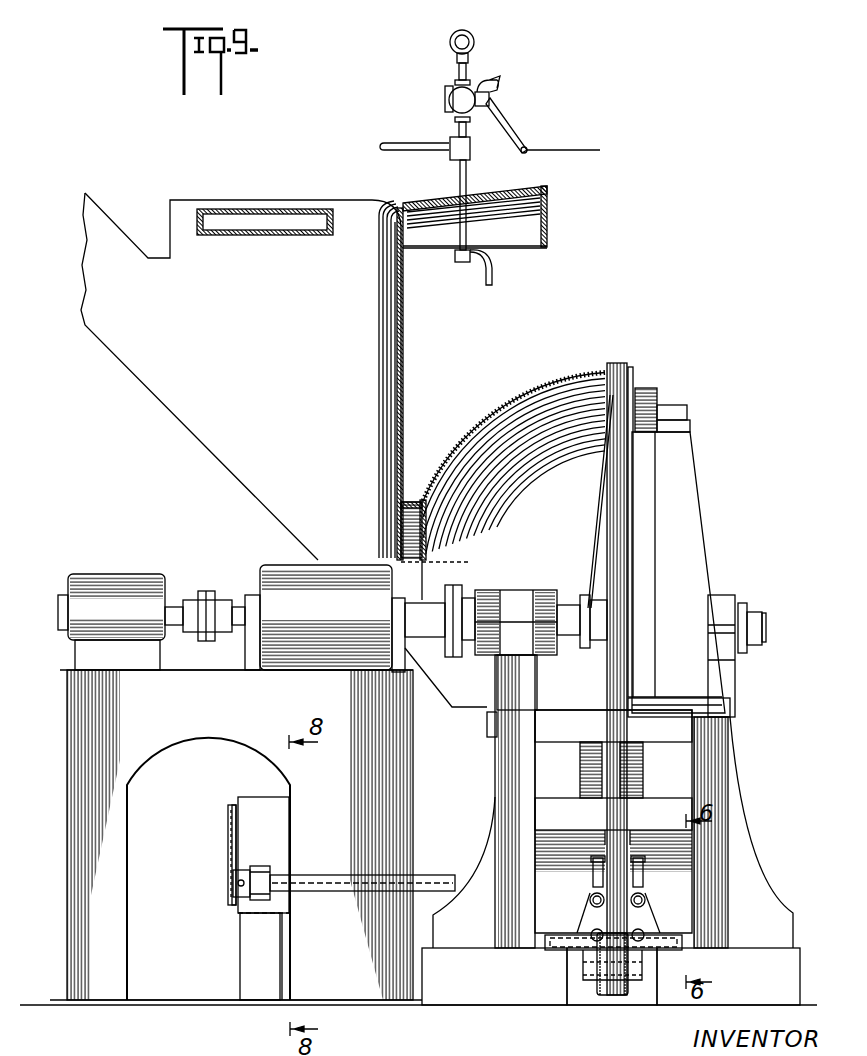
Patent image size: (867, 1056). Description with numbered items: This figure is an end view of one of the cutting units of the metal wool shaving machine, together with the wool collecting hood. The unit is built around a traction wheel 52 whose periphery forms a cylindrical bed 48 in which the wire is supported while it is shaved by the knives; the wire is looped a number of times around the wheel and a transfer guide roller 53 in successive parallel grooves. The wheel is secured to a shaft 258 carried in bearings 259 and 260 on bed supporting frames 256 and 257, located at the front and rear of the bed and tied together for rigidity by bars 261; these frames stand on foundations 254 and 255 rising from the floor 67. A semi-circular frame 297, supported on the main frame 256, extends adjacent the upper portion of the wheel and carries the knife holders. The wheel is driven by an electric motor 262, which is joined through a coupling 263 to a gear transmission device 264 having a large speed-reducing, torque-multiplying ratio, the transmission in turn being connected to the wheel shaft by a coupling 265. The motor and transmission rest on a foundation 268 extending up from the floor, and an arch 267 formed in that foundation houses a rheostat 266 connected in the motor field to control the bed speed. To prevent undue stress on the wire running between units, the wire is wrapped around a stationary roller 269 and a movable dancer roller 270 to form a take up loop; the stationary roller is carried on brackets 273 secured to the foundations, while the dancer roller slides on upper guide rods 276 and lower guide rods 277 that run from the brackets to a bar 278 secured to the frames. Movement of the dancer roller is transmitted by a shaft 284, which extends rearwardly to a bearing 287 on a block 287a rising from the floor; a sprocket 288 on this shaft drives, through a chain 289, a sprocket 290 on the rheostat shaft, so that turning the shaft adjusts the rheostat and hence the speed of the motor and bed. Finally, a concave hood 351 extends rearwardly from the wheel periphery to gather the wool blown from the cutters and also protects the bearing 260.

The cylindrical bed 48 is at (622, 370).
The traction wheel 52 is at (638, 552).
The transfer guide roller 53 is at (616, 995).
The floor 67 is at (472, 1006).
The foundation 254 is at (728, 976).
The foundation 255 is at (494, 976).
The bed supporting frame 256 is at (745, 857).
The bed supporting frame 257 is at (497, 797).
The shaft 258 is at (583, 596).
The bearing 259 is at (736, 596).
The bearing 260 is at (506, 590).
The bar 261 is at (589, 745).
The electric motor 262 is at (131, 575).
The coupling 263 is at (209, 579).
The gear transmission device 264 is at (272, 568).
The coupling 265 is at (464, 576).
The rheostat 266 is at (282, 826).
The arch 267 is at (211, 748).
The foundation 268 is at (118, 926).
The stationary roller 269 is at (646, 899).
The dancer roller 270 is at (639, 845).
The bracket 273 is at (586, 920).
The upper guide rod 276 is at (592, 883).
The lower guide rod 277 is at (590, 900).
The bar 278 is at (576, 829).
The shaft 284 is at (342, 892).
The bearing 287 is at (274, 854).
The block 287a is at (250, 961).
The sprocket 288 is at (233, 882).
The chain 289 is at (229, 847).
The sprocket 290 is at (228, 815).
The semi-circular frame 297 is at (636, 378).
The hood 351 is at (532, 392).